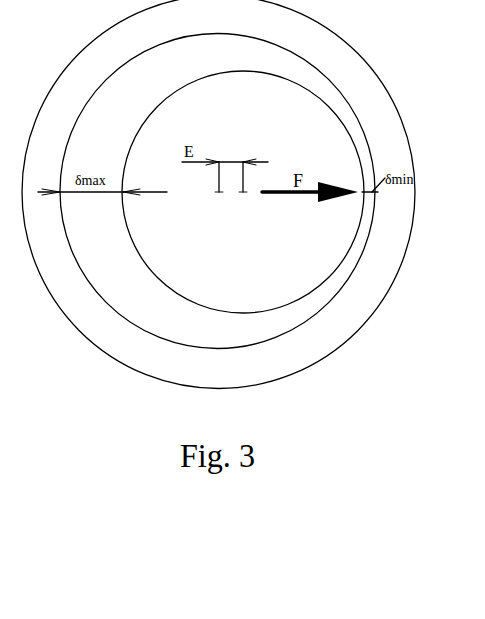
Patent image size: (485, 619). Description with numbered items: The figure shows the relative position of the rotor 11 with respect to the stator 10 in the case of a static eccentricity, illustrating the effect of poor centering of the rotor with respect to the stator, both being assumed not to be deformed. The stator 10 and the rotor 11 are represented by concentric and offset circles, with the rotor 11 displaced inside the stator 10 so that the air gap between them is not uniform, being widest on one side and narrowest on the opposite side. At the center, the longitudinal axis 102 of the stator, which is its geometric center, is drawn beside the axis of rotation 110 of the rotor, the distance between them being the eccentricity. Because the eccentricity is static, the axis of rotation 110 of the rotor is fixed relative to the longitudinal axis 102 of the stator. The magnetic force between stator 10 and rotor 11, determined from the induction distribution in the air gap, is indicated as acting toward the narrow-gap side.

The stator 10 is at (85, 58).
The rotor 11 is at (325, 118).
The longitudinal axis of the stator 102 is at (219, 193).
The axis of rotation of the rotor 110 is at (243, 193).